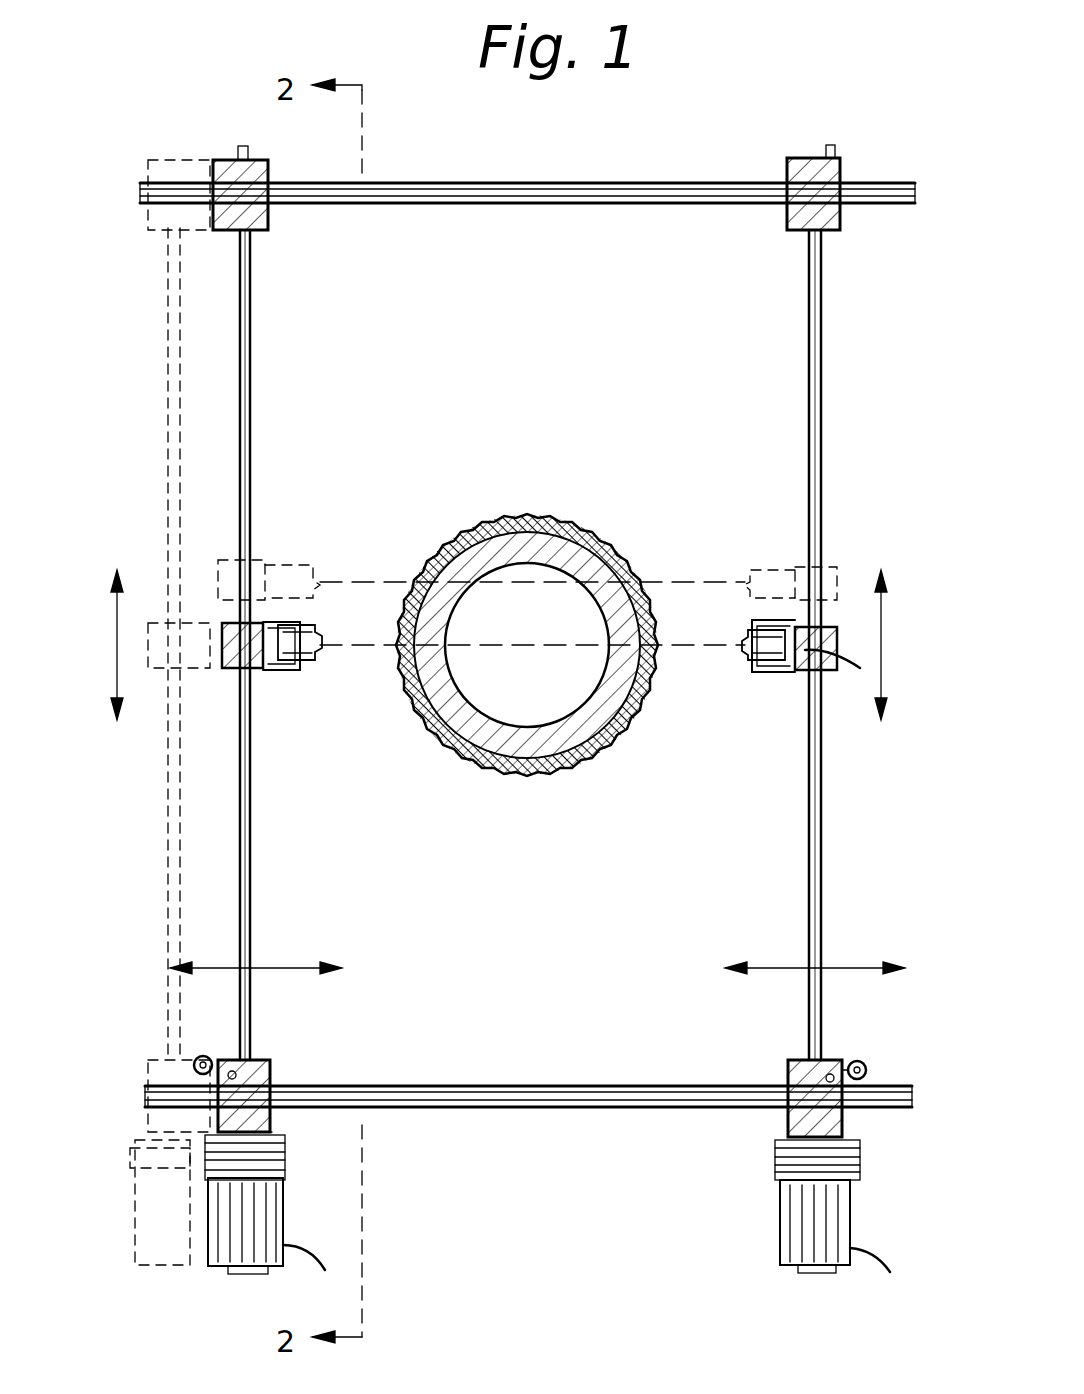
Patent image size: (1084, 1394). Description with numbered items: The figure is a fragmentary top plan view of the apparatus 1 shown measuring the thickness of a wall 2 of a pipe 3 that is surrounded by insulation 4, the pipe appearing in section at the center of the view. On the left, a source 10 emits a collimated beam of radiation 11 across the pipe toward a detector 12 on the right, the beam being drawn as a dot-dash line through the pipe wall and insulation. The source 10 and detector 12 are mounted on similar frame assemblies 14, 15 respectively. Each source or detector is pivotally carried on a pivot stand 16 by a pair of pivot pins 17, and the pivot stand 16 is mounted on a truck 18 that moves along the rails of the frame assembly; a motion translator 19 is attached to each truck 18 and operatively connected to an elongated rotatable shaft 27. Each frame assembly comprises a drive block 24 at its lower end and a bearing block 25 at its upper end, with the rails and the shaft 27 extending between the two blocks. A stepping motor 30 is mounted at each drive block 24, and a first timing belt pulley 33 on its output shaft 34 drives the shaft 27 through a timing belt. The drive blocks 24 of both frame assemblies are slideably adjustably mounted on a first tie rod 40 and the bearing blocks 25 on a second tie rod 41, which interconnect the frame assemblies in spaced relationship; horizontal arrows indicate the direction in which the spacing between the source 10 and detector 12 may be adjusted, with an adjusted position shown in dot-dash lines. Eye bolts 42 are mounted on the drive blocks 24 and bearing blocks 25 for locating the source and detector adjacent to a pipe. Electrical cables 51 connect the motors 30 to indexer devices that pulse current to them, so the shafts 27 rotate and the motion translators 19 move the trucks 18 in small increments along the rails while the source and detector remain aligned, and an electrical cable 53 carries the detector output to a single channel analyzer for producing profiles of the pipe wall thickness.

The apparatus 1 is at (562, 1222).
The wall 2 is at (525, 520).
The pipe 3 is at (462, 540).
The insulation 4 is at (572, 532).
The source 10 is at (290, 562).
The collimated beam of radiation 11 is at (378, 580).
The detector 12 is at (748, 662).
The frame assembly 14 is at (252, 868).
The frame assembly 15 is at (806, 850).
The pivot stand 16 is at (285, 670).
The pivot pins 17 is at (300, 626).
The truck 18 is at (258, 668).
The motion translator 19 is at (222, 665).
The drive block 24 is at (270, 1125).
The bearing block 25 is at (266, 225).
The rotatable shaft 27 is at (252, 412).
The stepping motor 30 is at (284, 1215).
The first timing belt pulley 33 is at (212, 1150).
The output shaft 34 is at (285, 1165).
The first tie rod 40 is at (534, 1107).
The second tie rod 41 is at (522, 183).
The eye bolts 42 is at (238, 146).
The electrical cables 51 is at (305, 1268).
The electrical cable 53 is at (870, 652).